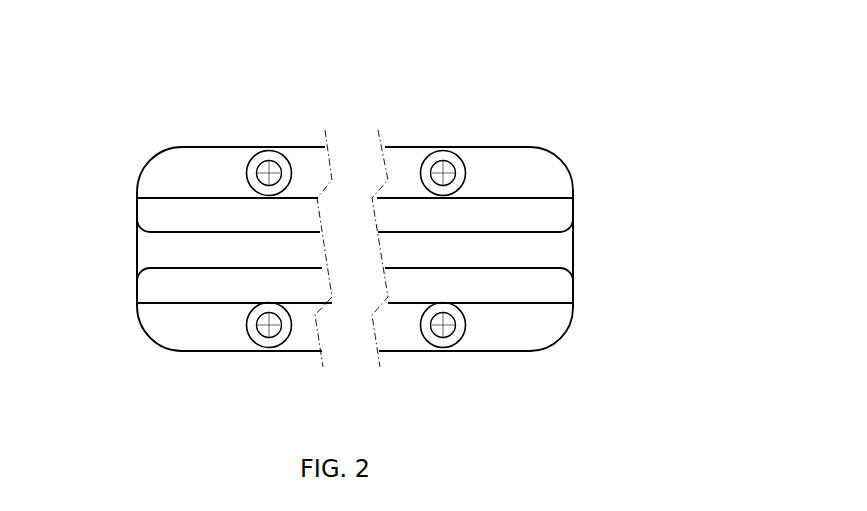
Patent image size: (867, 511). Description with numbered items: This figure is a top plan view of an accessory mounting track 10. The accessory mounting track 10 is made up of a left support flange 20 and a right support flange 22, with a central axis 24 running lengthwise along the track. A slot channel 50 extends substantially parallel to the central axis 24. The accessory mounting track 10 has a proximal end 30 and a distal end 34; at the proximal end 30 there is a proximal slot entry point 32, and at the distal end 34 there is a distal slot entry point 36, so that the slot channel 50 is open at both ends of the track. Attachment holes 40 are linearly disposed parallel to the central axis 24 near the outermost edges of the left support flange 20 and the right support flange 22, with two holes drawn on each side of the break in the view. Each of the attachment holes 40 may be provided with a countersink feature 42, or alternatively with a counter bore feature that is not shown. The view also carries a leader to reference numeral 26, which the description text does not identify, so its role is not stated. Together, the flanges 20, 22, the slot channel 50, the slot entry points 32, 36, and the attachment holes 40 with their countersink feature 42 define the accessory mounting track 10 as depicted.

The accessory mounting track 10 is at (608, 112).
The left support flange 20 is at (403, 332).
The right support flange 22 is at (405, 170).
The central axis 24 is at (440, 252).
The recess 26 is at (508, 258).
The proximal end 30 is at (580, 242).
The proximal slot entry point 32 is at (573, 257).
The distal end 34 is at (128, 232).
The distal slot entry point 36 is at (137, 260).
The attachment holes 40 is at (453, 160).
The countersink feature 42 is at (252, 152).
The slot channel 50 is at (238, 258).